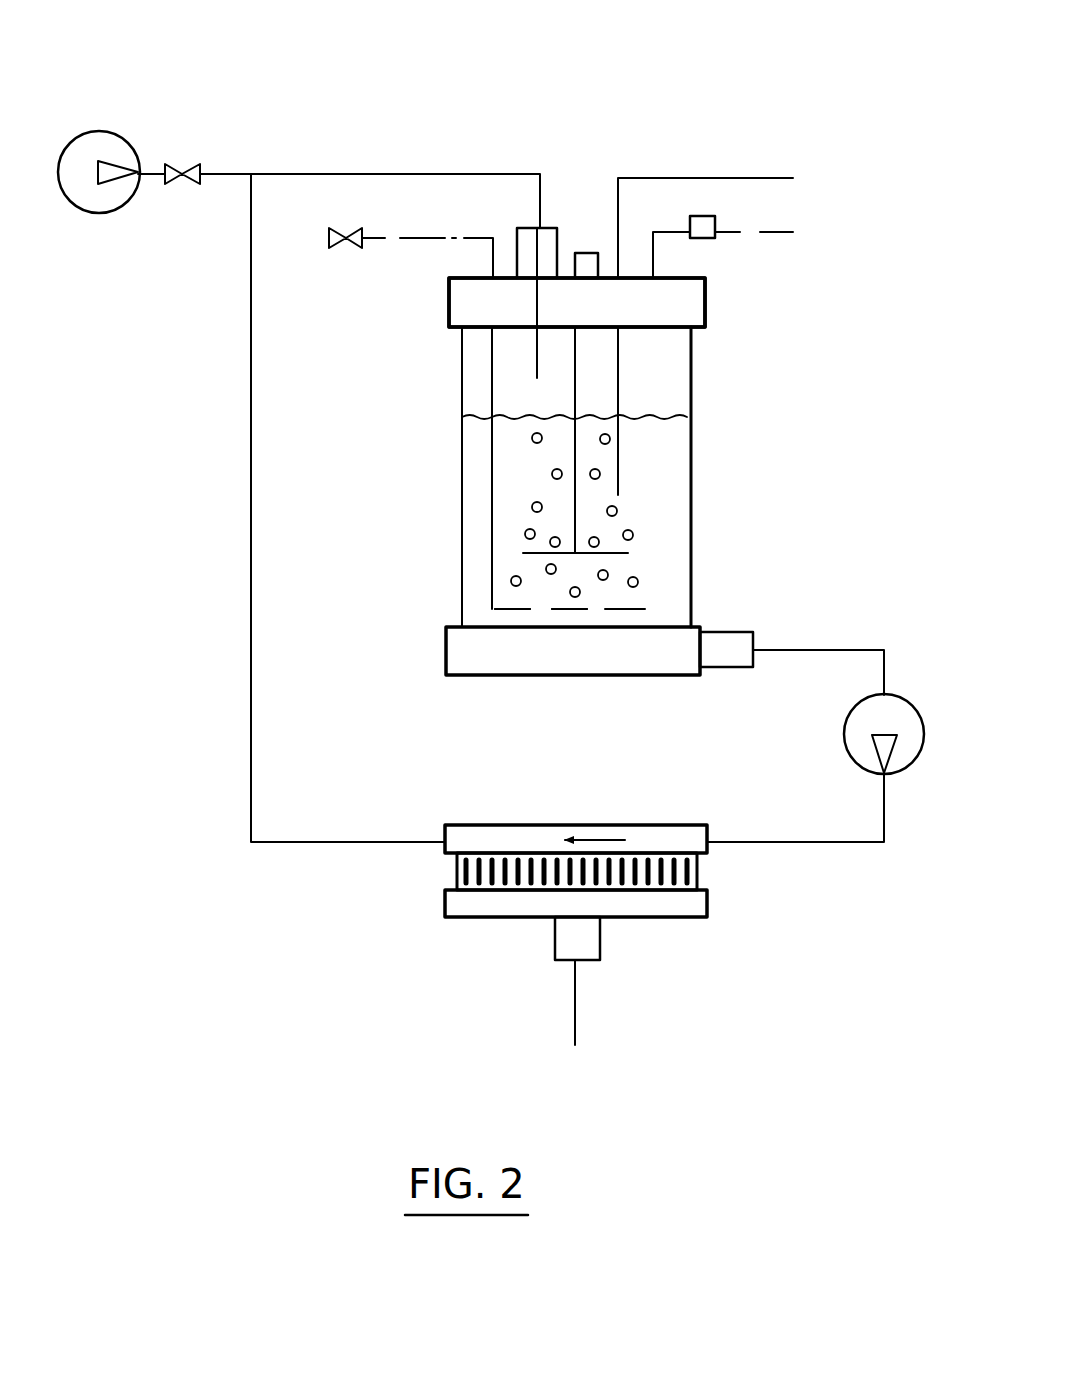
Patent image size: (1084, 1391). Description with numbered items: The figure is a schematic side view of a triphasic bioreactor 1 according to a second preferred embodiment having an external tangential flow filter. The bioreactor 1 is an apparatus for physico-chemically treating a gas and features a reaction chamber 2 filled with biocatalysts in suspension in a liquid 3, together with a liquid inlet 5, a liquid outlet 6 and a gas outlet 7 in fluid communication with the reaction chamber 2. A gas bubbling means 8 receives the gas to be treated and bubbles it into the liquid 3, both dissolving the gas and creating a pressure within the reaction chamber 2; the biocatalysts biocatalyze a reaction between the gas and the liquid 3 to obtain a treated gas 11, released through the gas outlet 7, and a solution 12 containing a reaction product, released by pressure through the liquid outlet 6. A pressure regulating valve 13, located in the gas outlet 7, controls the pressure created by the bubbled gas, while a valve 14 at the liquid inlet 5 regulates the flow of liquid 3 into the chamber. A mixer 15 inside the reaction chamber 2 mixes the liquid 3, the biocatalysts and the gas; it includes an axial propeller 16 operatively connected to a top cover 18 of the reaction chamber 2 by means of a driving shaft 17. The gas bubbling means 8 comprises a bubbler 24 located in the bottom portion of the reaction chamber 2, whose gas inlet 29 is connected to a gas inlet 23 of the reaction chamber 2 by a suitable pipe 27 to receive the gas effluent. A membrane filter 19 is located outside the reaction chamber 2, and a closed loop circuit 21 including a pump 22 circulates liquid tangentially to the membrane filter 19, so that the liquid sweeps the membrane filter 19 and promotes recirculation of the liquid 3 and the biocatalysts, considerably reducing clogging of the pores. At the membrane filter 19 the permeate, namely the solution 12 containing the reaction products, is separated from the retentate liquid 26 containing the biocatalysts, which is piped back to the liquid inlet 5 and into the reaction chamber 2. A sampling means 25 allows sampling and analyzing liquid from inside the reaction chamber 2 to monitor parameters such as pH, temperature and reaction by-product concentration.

The triphasic bioreactor 1 is at (426, 112).
The reaction chamber 2 is at (700, 465).
The liquid 3 is at (660, 502).
The liquid inlet 5 is at (540, 227).
The liquid outlet 6 is at (801, 648).
The gas outlet 7 is at (723, 234).
The gas bubbling means 8 is at (490, 550).
The treated gas 11 is at (672, 379).
The solution containing a reaction product 12 is at (496, 902).
The pressure regulating valve 13 is at (718, 222).
The valve 14 is at (190, 166).
The mixer 15 is at (570, 522).
The axial propeller 16 is at (590, 557).
The driving shaft 17 is at (576, 533).
The top cover 18 is at (715, 317).
The membrane filter 19 is at (450, 877).
The closed loop circuit 21 is at (251, 772).
The pump 22 is at (841, 727).
The gas inlet of the reaction chamber 23 is at (492, 273).
The bubbler 24 is at (620, 608).
The sampling means 25 is at (717, 177).
The retentate liquid 26 is at (251, 556).
The pipe 27 is at (492, 400).
The gas inlet of the bubbler 29 is at (505, 608).